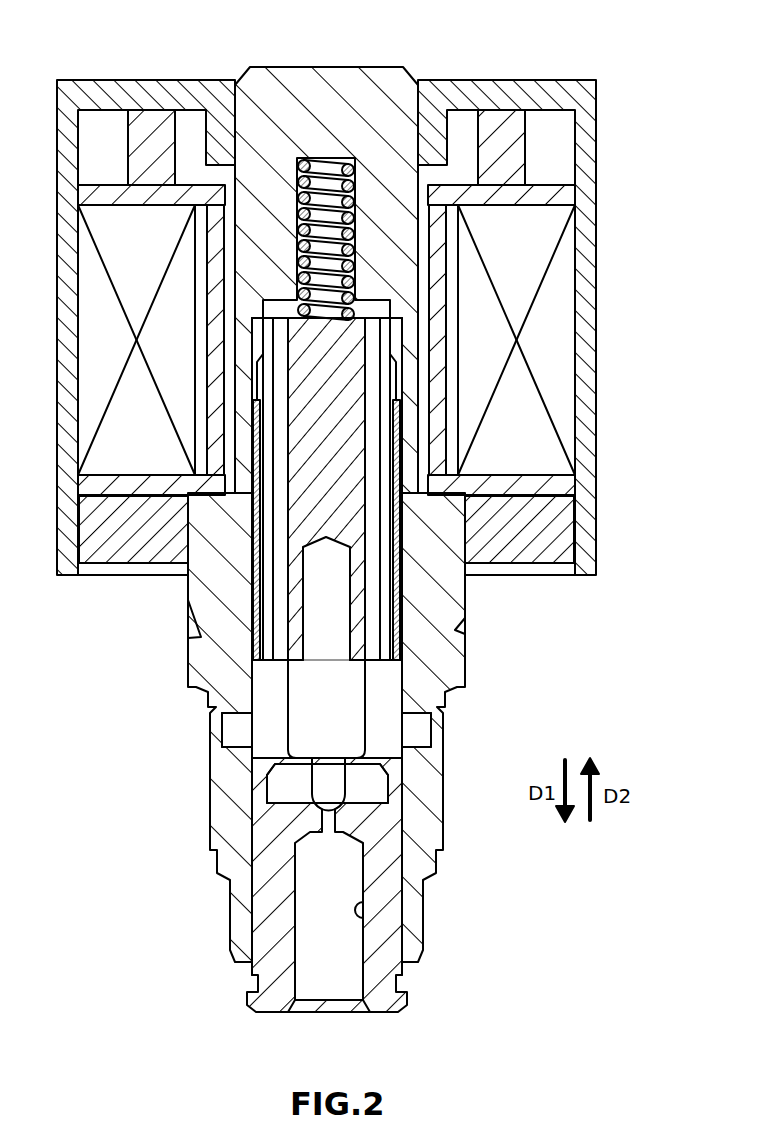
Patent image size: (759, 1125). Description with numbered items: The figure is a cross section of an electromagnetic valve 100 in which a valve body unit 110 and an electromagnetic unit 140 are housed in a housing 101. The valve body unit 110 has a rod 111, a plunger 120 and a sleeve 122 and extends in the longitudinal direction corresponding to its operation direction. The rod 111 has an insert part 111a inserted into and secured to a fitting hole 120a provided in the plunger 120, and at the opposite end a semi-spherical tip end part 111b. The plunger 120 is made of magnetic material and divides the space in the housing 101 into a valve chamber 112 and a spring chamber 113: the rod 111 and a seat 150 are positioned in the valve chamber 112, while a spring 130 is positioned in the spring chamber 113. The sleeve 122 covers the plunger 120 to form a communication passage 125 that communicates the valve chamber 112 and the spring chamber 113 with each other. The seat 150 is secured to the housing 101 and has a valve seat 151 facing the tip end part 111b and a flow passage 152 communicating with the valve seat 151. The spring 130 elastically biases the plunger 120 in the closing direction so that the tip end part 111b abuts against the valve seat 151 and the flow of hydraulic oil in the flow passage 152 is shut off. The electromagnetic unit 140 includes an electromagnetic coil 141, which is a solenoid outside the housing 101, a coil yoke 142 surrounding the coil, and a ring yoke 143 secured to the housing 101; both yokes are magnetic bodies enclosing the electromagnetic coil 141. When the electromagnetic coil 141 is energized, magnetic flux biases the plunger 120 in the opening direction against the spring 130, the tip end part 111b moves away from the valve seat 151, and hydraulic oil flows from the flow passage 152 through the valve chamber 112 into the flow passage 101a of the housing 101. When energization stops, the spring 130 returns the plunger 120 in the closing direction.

The electromagnetic valve 100 is at (556, 66).
The housing 101 is at (388, 72).
The flow passage 101a is at (240, 723).
The valve body unit 110 is at (271, 678).
The rod 111 is at (274, 747).
The insert part 111a is at (313, 615).
The tip end part 111b is at (255, 830).
The valve chamber 112 is at (300, 762).
The spring chamber 113 is at (287, 310).
The plunger 120 is at (402, 375).
The fitting hole 120a is at (310, 590).
The sleeve 122 is at (246, 423).
The communication passage 125 is at (375, 580).
The spring 130 is at (400, 187).
The electromagnetic unit 140 is at (602, 432).
The electromagnetic coil 141 is at (557, 308).
The coil yoke 142 is at (590, 512).
The ring yoke 143 is at (557, 532).
The seat 150 is at (260, 885).
The valve seat 151 is at (313, 783).
The flow passage 152 is at (358, 908).